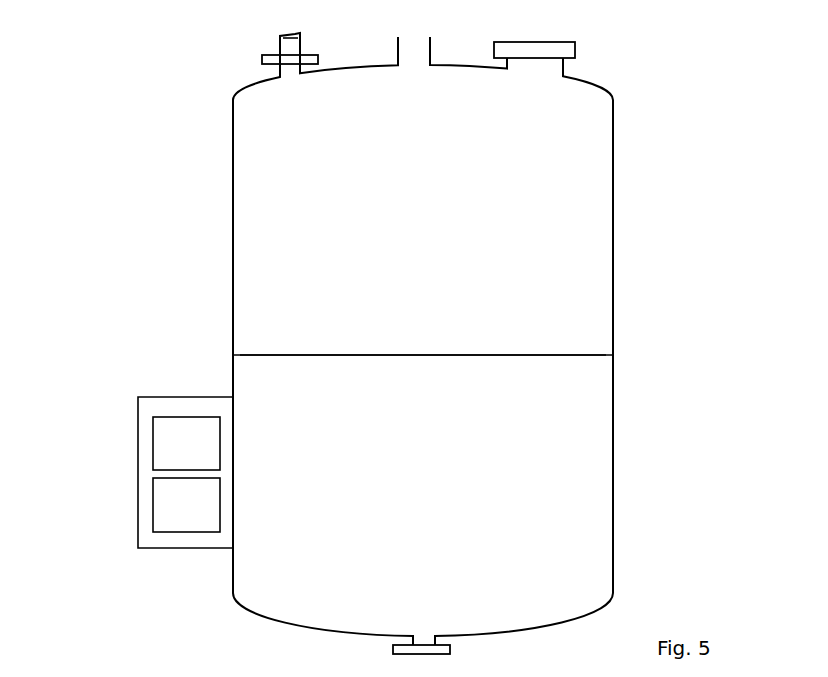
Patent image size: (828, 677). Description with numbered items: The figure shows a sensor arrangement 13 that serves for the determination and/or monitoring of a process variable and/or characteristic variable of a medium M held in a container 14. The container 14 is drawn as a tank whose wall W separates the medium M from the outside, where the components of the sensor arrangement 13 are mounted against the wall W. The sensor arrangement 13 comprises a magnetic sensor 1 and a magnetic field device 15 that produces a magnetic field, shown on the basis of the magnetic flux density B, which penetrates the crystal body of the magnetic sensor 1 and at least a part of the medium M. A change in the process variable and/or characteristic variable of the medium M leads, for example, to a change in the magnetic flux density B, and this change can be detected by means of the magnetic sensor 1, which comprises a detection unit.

The sensor arrangement 13 is at (74, 290).
The container 14 is at (211, 142).
The container wall W is at (228, 298).
The magnetic sensor 1 is at (186, 443).
The magnetic field device 15 is at (186, 505).
The magnetic flux density B is at (257, 495).
The medium M is at (423, 421).